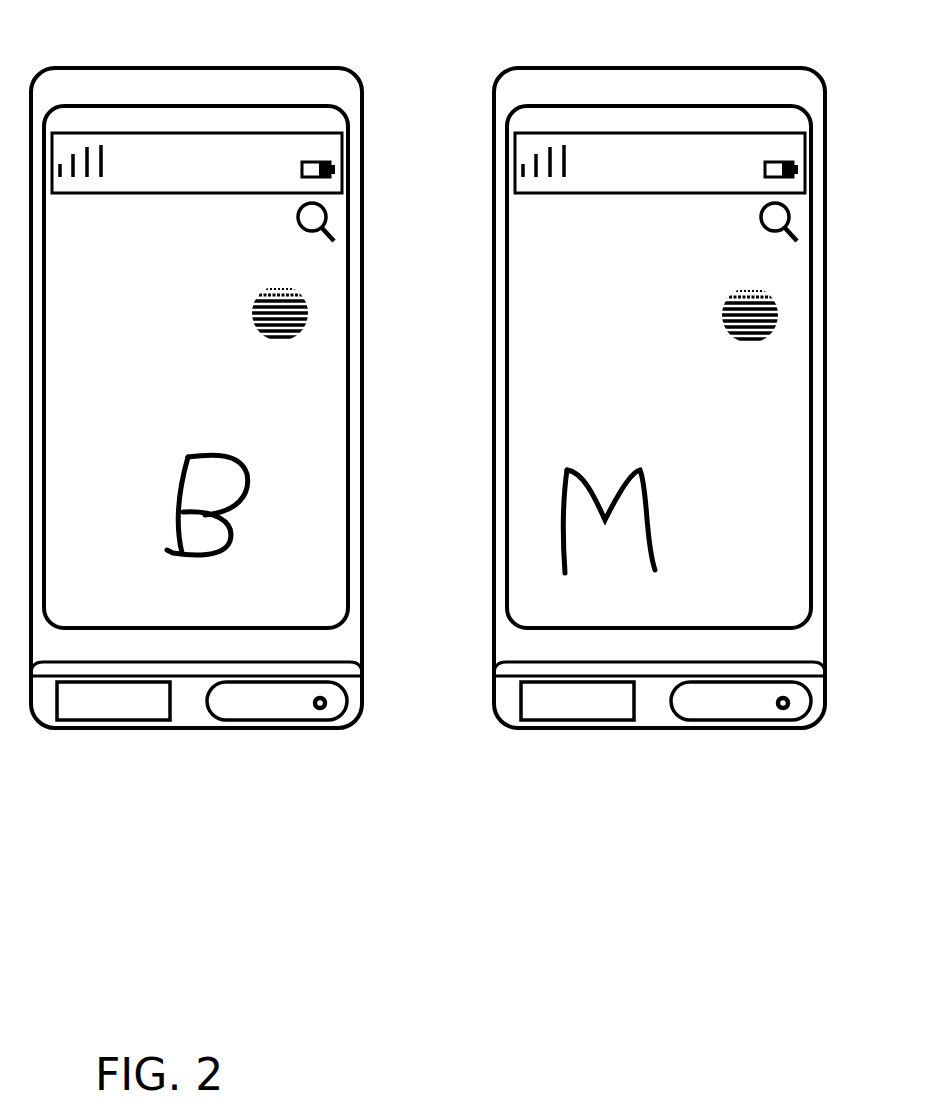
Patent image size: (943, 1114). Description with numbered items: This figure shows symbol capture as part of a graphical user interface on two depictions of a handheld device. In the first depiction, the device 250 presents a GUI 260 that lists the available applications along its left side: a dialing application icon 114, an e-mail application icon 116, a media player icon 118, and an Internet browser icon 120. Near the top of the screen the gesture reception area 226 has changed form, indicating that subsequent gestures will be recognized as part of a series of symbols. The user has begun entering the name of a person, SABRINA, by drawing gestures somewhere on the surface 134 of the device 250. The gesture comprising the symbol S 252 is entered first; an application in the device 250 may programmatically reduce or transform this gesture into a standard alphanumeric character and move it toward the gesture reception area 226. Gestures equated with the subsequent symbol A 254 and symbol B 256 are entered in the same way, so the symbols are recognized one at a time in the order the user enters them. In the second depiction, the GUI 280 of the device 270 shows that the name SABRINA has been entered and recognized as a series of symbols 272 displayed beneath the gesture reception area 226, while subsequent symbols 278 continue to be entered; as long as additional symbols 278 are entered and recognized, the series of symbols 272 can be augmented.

The device 250 is at (200, 64).
The device 270 is at (663, 64).
The gesture reception area 226 is at (283, 280).
The dialing application icon 114 is at (137, 298).
The e-mail application icon 116 is at (128, 382).
The media player icon 118 is at (140, 458).
The Internet browser icon 120 is at (137, 555).
The device surface 134 is at (214, 331).
The symbol "S" 252 is at (258, 382).
The symbol "A" 254 is at (253, 427).
The symbol "B" 256 is at (235, 512).
The GUI 260 is at (236, 583).
The series of symbols 272 is at (717, 365).
The subsequent symbols 278 is at (647, 500).
The GUI 280 is at (701, 585).